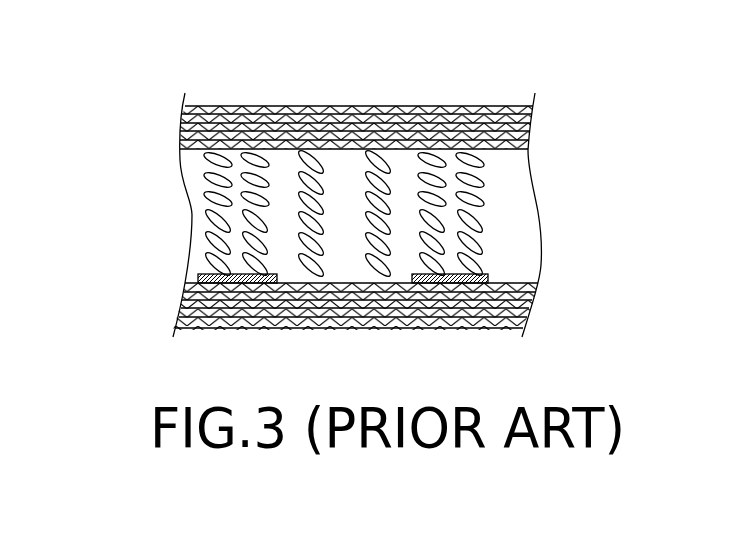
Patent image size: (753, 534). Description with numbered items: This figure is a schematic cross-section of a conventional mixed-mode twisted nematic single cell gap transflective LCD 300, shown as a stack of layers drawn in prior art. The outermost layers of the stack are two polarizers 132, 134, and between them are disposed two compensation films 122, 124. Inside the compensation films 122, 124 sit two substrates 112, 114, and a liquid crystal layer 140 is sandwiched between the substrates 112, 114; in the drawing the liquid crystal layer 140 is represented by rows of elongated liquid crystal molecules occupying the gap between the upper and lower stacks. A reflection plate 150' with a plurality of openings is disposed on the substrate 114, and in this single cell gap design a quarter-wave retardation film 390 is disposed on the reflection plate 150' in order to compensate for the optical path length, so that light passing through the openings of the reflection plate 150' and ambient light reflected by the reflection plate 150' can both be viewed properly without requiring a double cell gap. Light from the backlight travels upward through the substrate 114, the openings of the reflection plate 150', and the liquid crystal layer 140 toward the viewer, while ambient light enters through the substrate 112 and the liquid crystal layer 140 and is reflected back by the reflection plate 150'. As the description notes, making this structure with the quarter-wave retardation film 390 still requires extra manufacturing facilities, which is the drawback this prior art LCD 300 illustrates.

The mixed-mode twisted nematic single cell gap transflective LCD 300 is at (81, 49).
The polarizer 132 is at (533, 110).
The compensation film 122 is at (182, 125).
The substrate 112 is at (531, 143).
The liquid crystal layer 140 is at (520, 208).
The quarter-wave retardation film 390 is at (210, 252).
The reflection plate 150' is at (374, 257).
The substrate 114 is at (530, 292).
The compensation film 124 is at (181, 308).
The polarizer 134 is at (527, 328).